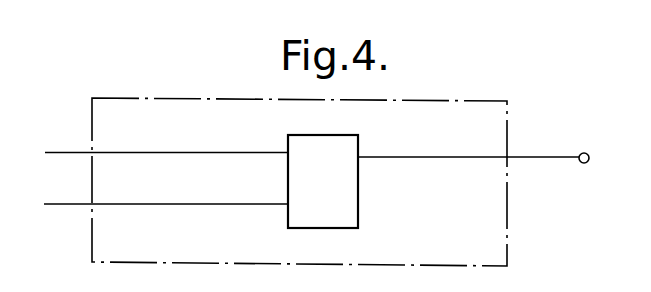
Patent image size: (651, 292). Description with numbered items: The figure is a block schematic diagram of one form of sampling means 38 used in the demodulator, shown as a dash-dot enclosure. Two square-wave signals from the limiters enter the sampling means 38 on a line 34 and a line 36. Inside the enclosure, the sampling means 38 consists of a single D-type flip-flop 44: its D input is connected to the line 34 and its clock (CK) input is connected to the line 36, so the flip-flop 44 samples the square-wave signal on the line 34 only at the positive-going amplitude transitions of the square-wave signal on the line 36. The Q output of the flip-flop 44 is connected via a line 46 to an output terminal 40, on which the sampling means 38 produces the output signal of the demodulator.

The line 34 is at (54, 150).
The line 36 is at (54, 202).
The sampling means 38 is at (434, 99).
The output terminal 40 is at (585, 152).
The D-type flip-flop 44 is at (361, 141).
The line 46 is at (540, 155).